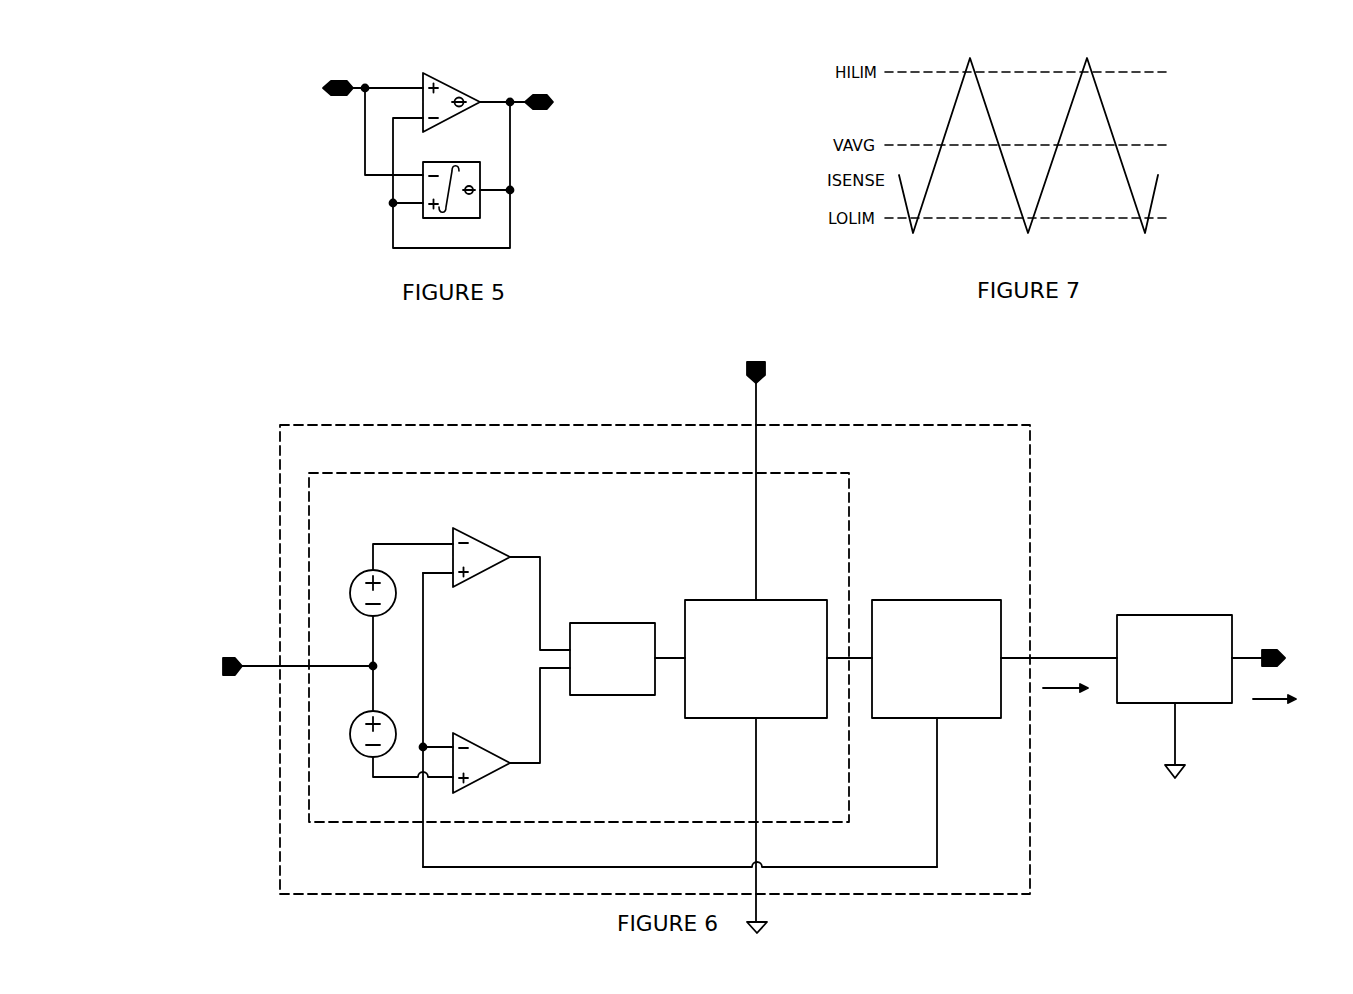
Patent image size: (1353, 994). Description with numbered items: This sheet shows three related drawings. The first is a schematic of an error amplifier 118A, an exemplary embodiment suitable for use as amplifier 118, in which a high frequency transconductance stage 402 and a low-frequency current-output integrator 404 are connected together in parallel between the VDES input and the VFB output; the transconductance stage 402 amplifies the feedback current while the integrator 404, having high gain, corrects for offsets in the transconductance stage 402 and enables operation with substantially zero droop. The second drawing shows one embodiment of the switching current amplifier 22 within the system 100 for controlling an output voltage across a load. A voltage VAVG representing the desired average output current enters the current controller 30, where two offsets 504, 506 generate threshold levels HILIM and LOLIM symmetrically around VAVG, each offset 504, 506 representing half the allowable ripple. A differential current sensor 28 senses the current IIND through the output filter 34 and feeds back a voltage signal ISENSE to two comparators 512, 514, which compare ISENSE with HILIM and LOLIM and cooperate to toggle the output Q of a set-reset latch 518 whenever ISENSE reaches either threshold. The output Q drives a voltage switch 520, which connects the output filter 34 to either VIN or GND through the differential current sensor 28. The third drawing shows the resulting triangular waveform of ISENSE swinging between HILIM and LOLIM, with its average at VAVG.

In FIG. 5, the error amplifier 118A is at (527, 70).
In FIG. 5, the amplifier 118 is at (476, 146).
In FIG. 5, the high frequency transconductance stage 402 is at (452, 72).
In FIG. 5, the low-frequency current-output integrator 404 is at (465, 160).
In FIG. 6, the system 100 is at (1167, 421).
In FIG. 6, the switching current amplifier 22 is at (567, 452).
In FIG. 6, the current controller 30 is at (579, 647).
In FIG. 6, the offset 504 is at (380, 617).
In FIG. 6, the offset 506 is at (387, 712).
In FIG. 6, the comparator 512 is at (481, 574).
In FIG. 6, the comparator 514 is at (482, 741).
In FIG. 6, the set-reset latch 518 is at (612, 623).
In FIG. 6, the voltage switch 520 is at (803, 681).
In FIG. 6, the differential current sensor 28 is at (981, 695).
In FIG. 6, the output filter 34 is at (1214, 679).